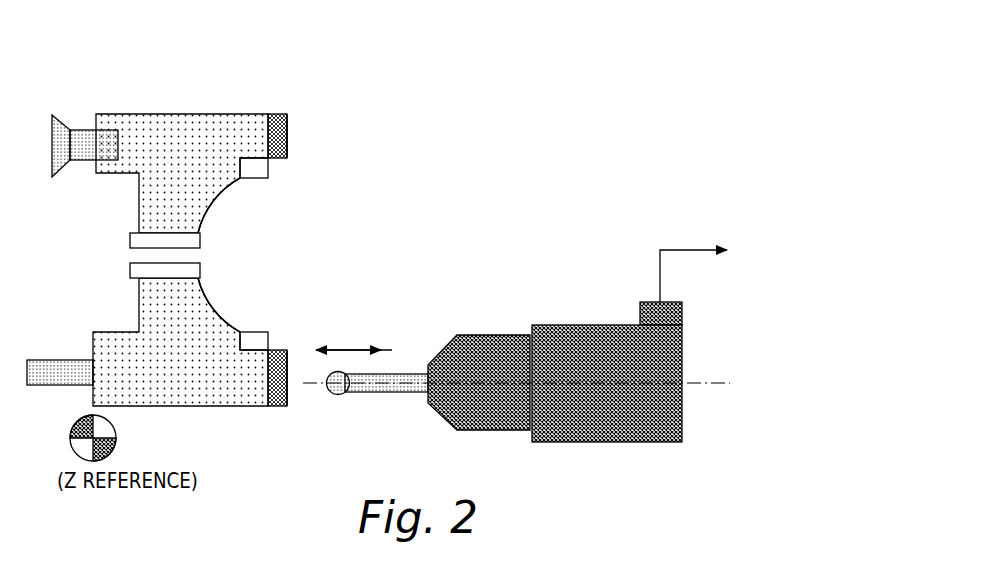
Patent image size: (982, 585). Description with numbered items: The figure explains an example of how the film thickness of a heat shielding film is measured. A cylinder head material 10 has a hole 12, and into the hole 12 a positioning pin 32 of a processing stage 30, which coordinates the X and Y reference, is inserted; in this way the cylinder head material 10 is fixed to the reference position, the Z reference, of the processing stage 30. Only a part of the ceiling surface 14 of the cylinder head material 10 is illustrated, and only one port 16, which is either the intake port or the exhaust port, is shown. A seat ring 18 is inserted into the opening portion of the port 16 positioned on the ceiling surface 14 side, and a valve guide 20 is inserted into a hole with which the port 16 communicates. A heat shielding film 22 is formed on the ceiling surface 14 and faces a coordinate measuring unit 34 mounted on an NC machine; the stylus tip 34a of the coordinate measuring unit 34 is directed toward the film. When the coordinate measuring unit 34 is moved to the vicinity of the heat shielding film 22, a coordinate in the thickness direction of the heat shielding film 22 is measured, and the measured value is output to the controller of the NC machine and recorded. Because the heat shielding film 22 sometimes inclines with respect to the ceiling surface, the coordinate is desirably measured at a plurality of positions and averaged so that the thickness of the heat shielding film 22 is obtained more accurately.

The cylinder head material 10 is at (172, 94).
The hole 12 is at (117, 138).
The ceiling surface 14 is at (280, 114).
The port 16 is at (221, 284).
The seat ring 18 is at (133, 233).
The valve guide 20 is at (258, 180).
The heat shielding film 22 is at (288, 132).
The processing stage 30 is at (55, 360).
The positioning pin 32 is at (75, 130).
The coordinate measuring unit 34 is at (497, 335).
The stylus ball 34a is at (382, 393).